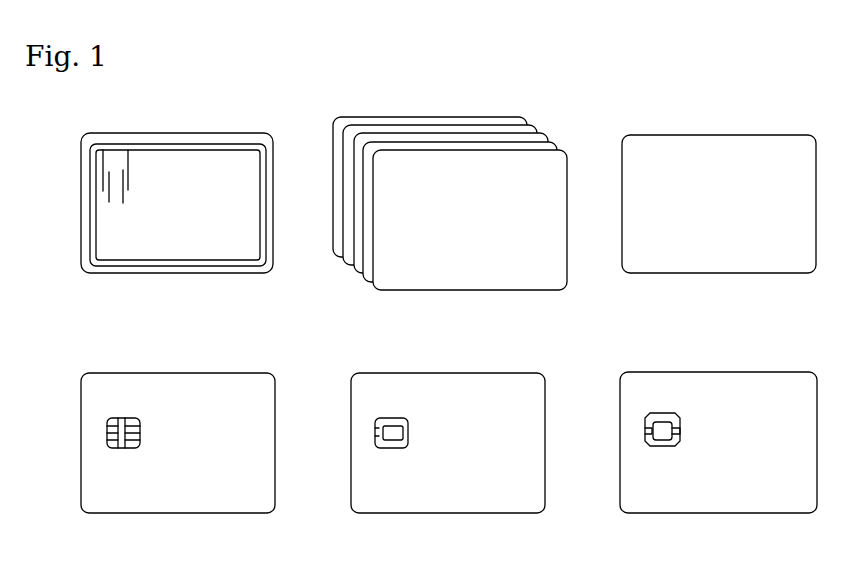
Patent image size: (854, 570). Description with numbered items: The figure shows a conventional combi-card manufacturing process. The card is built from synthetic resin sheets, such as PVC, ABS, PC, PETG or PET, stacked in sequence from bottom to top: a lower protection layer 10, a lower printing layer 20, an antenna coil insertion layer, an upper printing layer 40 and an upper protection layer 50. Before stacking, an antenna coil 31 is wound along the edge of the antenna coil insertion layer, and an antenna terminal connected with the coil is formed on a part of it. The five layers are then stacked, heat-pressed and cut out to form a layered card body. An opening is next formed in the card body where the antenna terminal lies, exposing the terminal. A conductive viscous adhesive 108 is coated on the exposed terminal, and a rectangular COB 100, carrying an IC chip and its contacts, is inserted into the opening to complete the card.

The lower protection layer 10 is at (340, 208).
The lower printing layer 20 is at (352, 228).
The antenna coil 31 is at (214, 140).
The upper printing layer 40 is at (368, 262).
The upper protection layer 50 is at (380, 279).
The COB (Chip on Board) 100 is at (105, 431).
The conductive viscous adhesive 108 is at (410, 430).